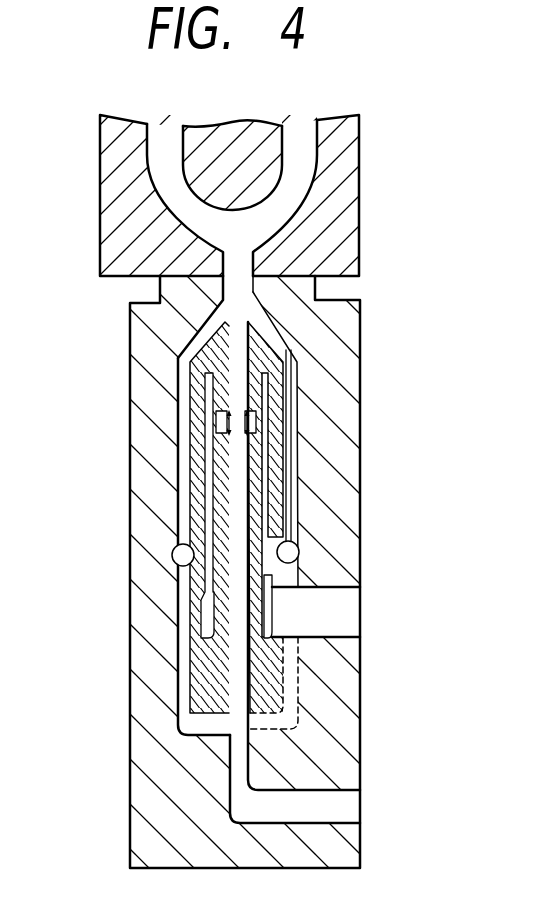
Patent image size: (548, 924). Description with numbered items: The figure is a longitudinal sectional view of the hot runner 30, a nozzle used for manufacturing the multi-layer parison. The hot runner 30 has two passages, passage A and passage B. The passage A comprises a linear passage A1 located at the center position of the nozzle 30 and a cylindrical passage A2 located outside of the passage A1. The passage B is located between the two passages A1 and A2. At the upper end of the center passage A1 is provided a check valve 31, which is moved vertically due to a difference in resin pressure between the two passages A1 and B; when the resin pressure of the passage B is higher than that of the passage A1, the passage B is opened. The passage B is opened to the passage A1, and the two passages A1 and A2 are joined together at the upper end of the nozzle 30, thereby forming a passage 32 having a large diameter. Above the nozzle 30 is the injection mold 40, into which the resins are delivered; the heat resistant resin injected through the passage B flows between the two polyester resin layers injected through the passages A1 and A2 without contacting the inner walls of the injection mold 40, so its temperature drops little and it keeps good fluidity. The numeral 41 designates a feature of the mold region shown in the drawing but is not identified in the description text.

The injection mold 40 is at (363, 207).
The Y-shaped inlet passage 41 is at (302, 155).
The passage having a large diameter 32 is at (238, 289).
The hot runner 30 is at (123, 425).
The check valve 31 is at (262, 367).
The cylindrical passage A2 is at (183, 500).
The linear passage A1 is at (240, 508).
The passage B is at (365, 609).
The passage A is at (365, 805).